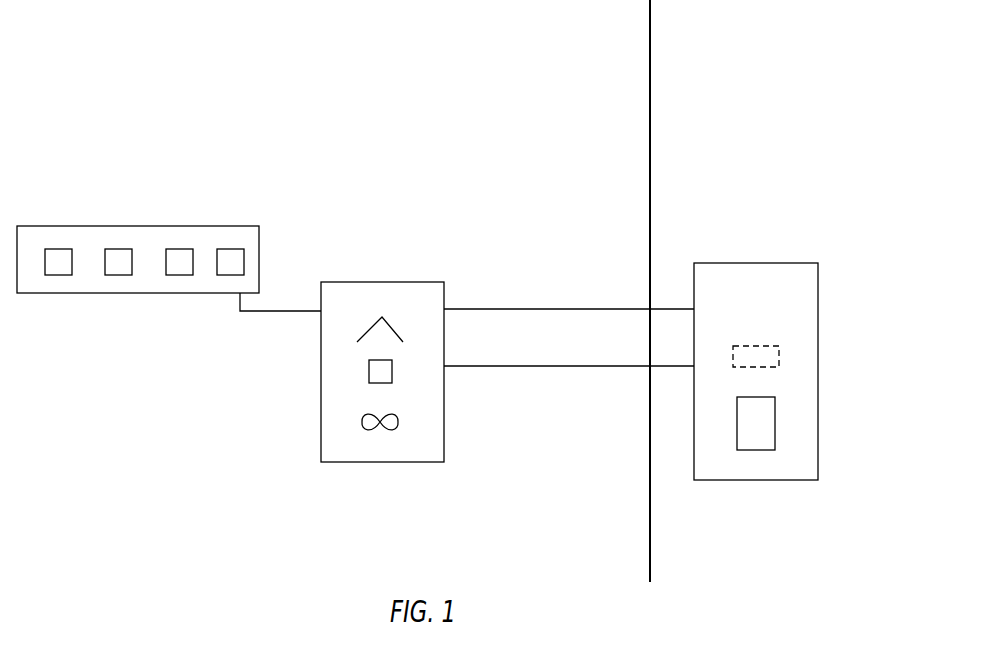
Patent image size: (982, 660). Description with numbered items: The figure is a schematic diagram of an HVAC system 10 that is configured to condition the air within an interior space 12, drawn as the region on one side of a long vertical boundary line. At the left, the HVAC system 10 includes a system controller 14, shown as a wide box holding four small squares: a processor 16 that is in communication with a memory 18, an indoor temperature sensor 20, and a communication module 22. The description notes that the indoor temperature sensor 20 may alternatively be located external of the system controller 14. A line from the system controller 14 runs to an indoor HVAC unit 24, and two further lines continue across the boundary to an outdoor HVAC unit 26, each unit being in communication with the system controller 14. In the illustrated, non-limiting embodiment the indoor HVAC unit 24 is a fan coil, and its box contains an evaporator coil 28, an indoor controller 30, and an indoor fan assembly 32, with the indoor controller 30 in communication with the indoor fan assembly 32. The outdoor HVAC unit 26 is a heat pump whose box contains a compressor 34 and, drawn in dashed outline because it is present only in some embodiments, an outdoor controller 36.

The HVAC system 10 is at (167, 82).
The interior space 12 is at (457, 71).
The system controller 14 is at (56, 226).
The processor 16 is at (61, 275).
The memory 18 is at (120, 275).
The indoor temperature sensor 20 is at (181, 275).
The communication module 22 is at (230, 275).
The indoor HVAC unit 24 is at (288, 455).
The outdoor HVAC unit 26 is at (710, 500).
The evaporator coil 28 is at (397, 331).
The indoor controller 30 is at (392, 375).
The indoor fan assembly 32 is at (398, 418).
The compressor 34 is at (775, 430).
The outdoor controller 36 is at (779, 358).